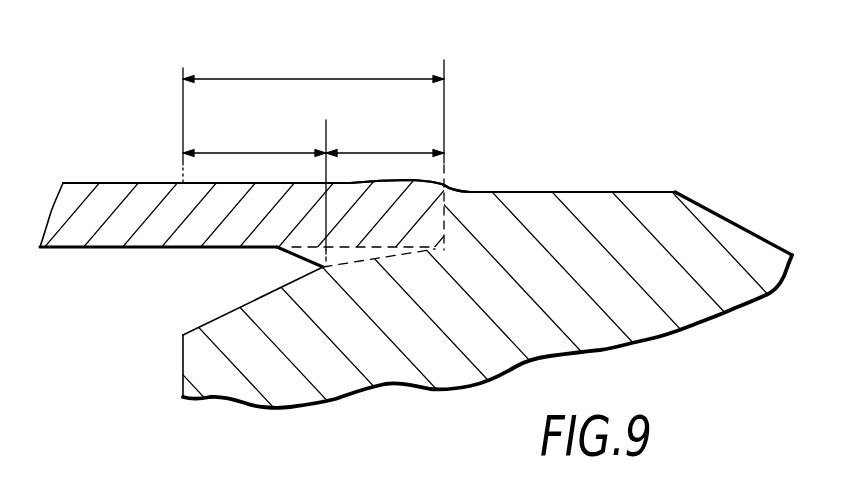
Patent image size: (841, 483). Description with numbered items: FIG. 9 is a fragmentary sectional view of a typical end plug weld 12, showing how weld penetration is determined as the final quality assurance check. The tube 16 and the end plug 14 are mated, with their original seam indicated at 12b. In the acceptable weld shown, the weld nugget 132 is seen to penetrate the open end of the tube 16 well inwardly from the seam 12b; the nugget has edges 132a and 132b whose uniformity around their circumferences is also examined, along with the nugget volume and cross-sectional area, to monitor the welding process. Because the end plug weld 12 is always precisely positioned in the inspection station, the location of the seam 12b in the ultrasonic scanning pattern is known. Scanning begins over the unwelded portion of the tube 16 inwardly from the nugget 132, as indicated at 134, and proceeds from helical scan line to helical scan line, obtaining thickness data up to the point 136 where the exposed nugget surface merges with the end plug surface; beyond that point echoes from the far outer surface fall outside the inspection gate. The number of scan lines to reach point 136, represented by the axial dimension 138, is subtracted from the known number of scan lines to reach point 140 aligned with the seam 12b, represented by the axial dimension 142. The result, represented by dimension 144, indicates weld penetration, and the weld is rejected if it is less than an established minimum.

The end plug weld 12 is at (469, 166).
The seam 12b is at (445, 232).
The end plug 14 is at (665, 227).
The tube 16 is at (77, 230).
The weld nugget 132 is at (343, 256).
The nugget edge 132a is at (278, 250).
The nugget edge 132b is at (292, 275).
The scanning start point 134 is at (183, 117).
The merge point 136 is at (328, 205).
The axial dimension 138 is at (247, 152).
The seam point 140 is at (478, 111).
The axial dimension 142 is at (291, 79).
The penetration dimension 144 is at (381, 152).